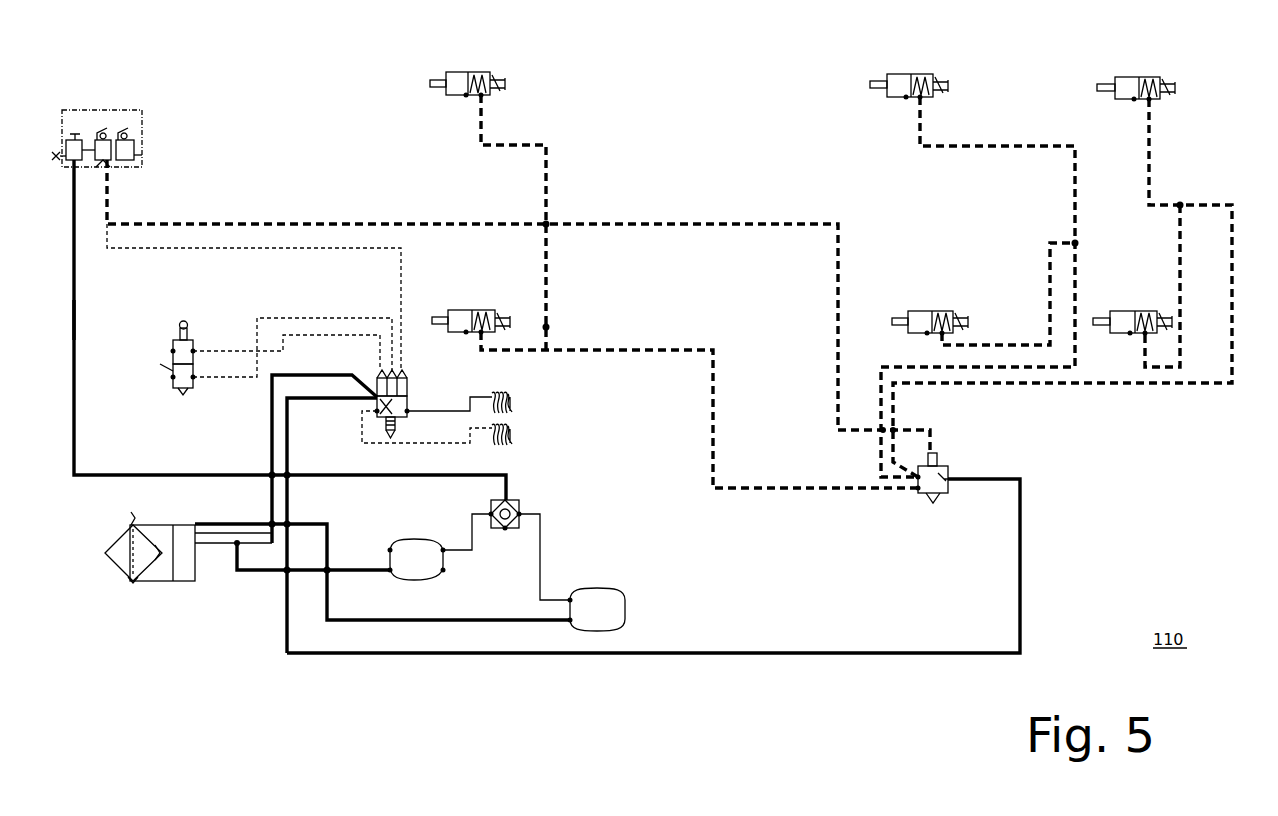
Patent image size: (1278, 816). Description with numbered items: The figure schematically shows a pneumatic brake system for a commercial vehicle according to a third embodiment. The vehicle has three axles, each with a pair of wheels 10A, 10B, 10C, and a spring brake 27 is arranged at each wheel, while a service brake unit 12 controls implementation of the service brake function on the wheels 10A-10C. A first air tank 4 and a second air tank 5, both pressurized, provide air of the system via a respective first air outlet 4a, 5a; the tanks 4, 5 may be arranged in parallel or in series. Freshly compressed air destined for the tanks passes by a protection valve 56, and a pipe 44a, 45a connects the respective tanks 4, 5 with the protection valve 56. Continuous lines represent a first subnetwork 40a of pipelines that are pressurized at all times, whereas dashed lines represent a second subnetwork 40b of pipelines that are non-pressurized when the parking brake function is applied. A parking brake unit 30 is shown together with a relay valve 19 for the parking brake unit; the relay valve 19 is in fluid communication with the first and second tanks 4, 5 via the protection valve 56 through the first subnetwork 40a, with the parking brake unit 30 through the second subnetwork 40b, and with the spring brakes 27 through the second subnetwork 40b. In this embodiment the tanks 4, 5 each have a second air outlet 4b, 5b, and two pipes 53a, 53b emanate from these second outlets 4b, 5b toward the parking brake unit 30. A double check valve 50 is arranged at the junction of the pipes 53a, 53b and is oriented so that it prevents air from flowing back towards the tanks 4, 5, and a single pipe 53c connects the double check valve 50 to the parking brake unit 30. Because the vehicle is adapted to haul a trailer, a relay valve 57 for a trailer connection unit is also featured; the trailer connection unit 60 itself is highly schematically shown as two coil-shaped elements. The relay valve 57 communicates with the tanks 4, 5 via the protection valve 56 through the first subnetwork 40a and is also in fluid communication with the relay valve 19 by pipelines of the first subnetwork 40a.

The first air tank 4 is at (447, 558).
The first air outlet 4a is at (388, 578).
The second air outlet 4b is at (435, 542).
The second air tank 5 is at (630, 608).
The first air outlet 5a is at (568, 620).
The second air outlet 5b is at (575, 595).
The wheel 10A is at (459, 186).
The wheel 10B is at (907, 190).
The wheel 10C is at (1125, 190).
The service brake unit 12 is at (172, 368).
The relay valve for the parking brake unit 19 is at (930, 450).
The spring brake 27 is at (505, 66).
The parking brake unit 30 is at (150, 108).
The first subnetwork 40a is at (80, 455).
The second subnetwork 40b is at (302, 214).
The pipe 44a is at (350, 548).
The pipe 45a is at (415, 620).
The double check valve 50 is at (518, 498).
The pipe 53a is at (468, 536).
The pipe 53b is at (543, 545).
The single pipe 53c is at (76, 318).
The protection valve 56 is at (143, 590).
The relay valve for a trailer connection unit 57 is at (407, 378).
The trailer connection unit 60 is at (515, 417).